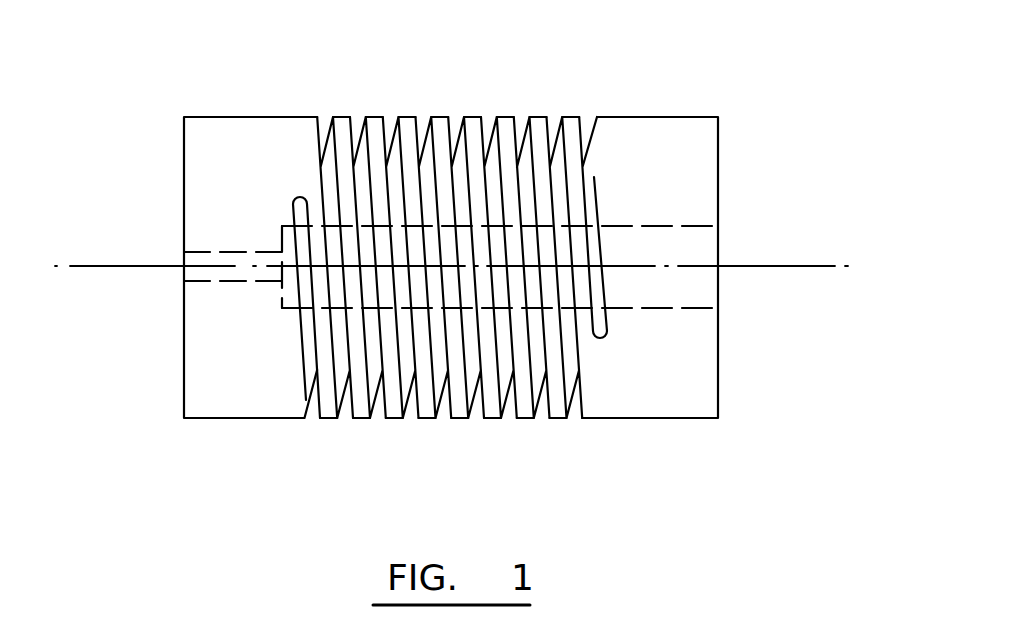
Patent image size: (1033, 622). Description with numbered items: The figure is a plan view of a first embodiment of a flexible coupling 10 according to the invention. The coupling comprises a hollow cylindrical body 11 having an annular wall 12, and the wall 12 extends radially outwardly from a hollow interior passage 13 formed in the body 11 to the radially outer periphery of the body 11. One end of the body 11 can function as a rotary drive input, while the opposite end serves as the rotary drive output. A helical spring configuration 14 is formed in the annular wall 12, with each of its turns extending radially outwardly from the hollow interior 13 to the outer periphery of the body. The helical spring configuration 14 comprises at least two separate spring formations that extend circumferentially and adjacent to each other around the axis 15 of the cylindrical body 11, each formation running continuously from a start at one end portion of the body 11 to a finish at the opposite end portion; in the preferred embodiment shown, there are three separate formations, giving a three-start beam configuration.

The flexible coupling 10 is at (512, 243).
The hollow cylindrical body 11 is at (685, 367).
The annular wall 12 is at (674, 147).
The hollow interior passage 13 is at (693, 278).
The helical spring configuration 14 is at (473, 125).
The axis 15 is at (112, 265).